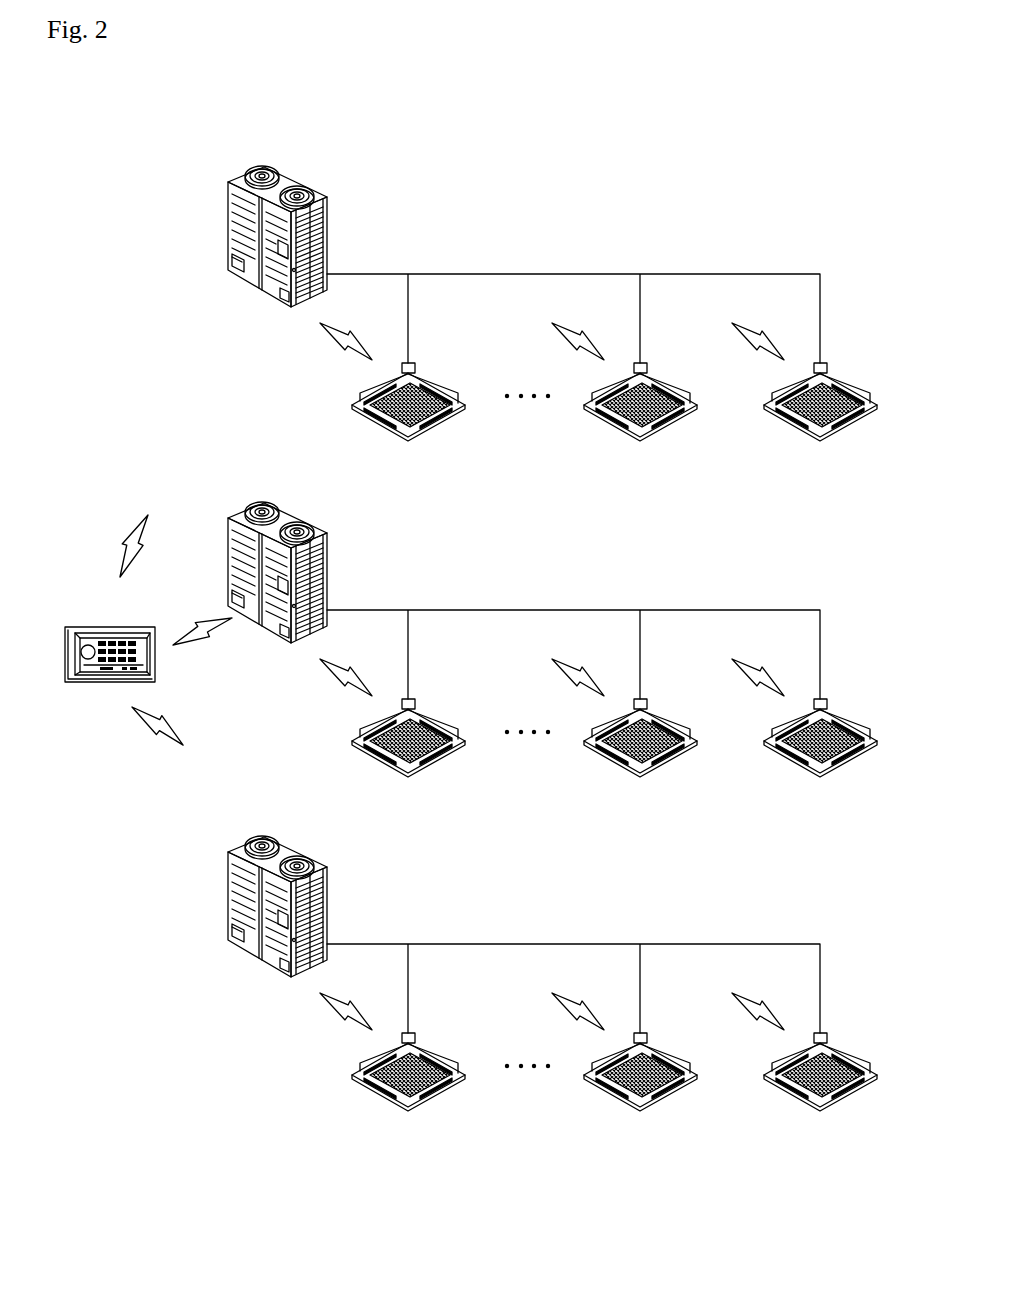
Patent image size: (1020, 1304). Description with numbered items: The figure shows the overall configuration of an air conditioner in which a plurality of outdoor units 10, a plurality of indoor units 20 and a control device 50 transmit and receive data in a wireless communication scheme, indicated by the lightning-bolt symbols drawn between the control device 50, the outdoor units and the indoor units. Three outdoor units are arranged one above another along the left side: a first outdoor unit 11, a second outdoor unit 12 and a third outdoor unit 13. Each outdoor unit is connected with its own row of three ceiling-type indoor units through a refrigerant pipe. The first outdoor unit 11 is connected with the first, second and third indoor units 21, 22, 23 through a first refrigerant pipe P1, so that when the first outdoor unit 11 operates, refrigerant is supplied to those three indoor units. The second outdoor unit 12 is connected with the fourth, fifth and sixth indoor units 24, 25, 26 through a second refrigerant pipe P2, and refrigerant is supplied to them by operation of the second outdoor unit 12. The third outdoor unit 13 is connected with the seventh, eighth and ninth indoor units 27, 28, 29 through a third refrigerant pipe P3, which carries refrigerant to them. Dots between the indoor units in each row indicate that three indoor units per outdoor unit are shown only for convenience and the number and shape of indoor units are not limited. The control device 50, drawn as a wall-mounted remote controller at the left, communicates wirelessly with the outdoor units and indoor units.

The outdoor units 10 is at (331, 117).
The first outdoor unit 11 is at (250, 164).
The second outdoor unit 12 is at (248, 503).
The third outdoor unit 13 is at (247, 836).
The indoor units 20 is at (848, 232).
The first indoor unit 21 is at (422, 431).
The second indoor unit 22 is at (654, 431).
The third indoor unit 23 is at (834, 431).
The fourth indoor unit 24 is at (422, 767).
The fifth indoor unit 25 is at (654, 767).
The sixth indoor unit 26 is at (834, 767).
The seventh indoor unit 27 is at (422, 1101).
The eighth indoor unit 28 is at (654, 1101).
The ninth indoor unit 29 is at (834, 1101).
The first refrigerant pipe P1 is at (770, 273).
The second refrigerant pipe P2 is at (770, 609).
The third refrigerant pipe P3 is at (770, 943).
The control device 50 is at (138, 627).